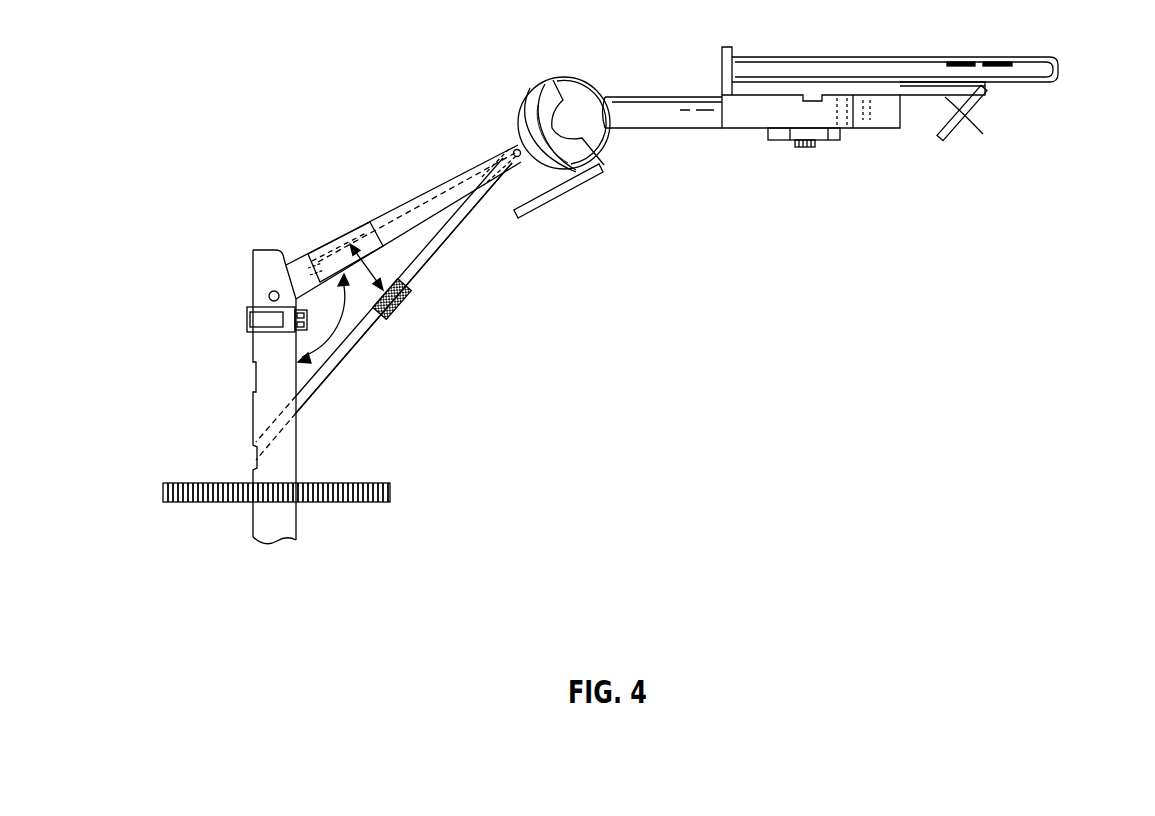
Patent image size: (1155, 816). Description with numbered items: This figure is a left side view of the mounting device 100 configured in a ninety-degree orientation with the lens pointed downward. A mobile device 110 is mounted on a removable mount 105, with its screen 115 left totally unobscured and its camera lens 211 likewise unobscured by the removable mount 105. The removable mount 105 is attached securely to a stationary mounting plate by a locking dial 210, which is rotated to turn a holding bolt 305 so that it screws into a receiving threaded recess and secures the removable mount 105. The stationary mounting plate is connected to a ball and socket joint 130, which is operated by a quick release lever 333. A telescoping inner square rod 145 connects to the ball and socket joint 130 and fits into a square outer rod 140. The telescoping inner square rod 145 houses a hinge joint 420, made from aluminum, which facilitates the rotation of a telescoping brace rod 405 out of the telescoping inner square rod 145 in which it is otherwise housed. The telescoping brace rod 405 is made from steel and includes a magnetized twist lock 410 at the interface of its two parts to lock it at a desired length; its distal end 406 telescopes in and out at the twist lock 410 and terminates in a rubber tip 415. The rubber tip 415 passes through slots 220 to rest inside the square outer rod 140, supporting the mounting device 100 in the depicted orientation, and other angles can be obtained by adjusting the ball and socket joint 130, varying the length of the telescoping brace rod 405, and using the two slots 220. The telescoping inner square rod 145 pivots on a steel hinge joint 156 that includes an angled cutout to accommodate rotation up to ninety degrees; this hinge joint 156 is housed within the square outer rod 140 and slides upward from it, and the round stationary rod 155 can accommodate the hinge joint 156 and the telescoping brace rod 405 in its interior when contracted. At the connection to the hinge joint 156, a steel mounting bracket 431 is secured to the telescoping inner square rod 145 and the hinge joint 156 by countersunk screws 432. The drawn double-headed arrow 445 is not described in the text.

The mounting device 100 is at (268, 556).
The removable mount 105 is at (965, 128).
The mobile device 110 is at (1060, 68).
The screen 115 is at (963, 56).
The ball and socket joint 130 is at (575, 75).
The square outer rod 140 is at (252, 423).
The telescoping inner square rod 145 is at (293, 268).
The round stationary rod 155 is at (298, 515).
The hinge joint 156 is at (247, 318).
The locking dial 210 is at (840, 135).
The lens 211 is at (1032, 83).
The slots 220 is at (332, 266).
The holding bolt 305 is at (803, 148).
The quick release lever 333 is at (571, 190).
The telescoping brace rod 405 is at (450, 238).
The distal end 406 is at (320, 387).
The magnetized twist lock 410 is at (405, 297).
The rubber tip 415 is at (297, 418).
The hinge joint 420 is at (510, 150).
The steel mounting bracket 431 is at (370, 223).
The countersunk screws 432 is at (368, 318).
The arm with actuation arrow 445 is at (387, 247).